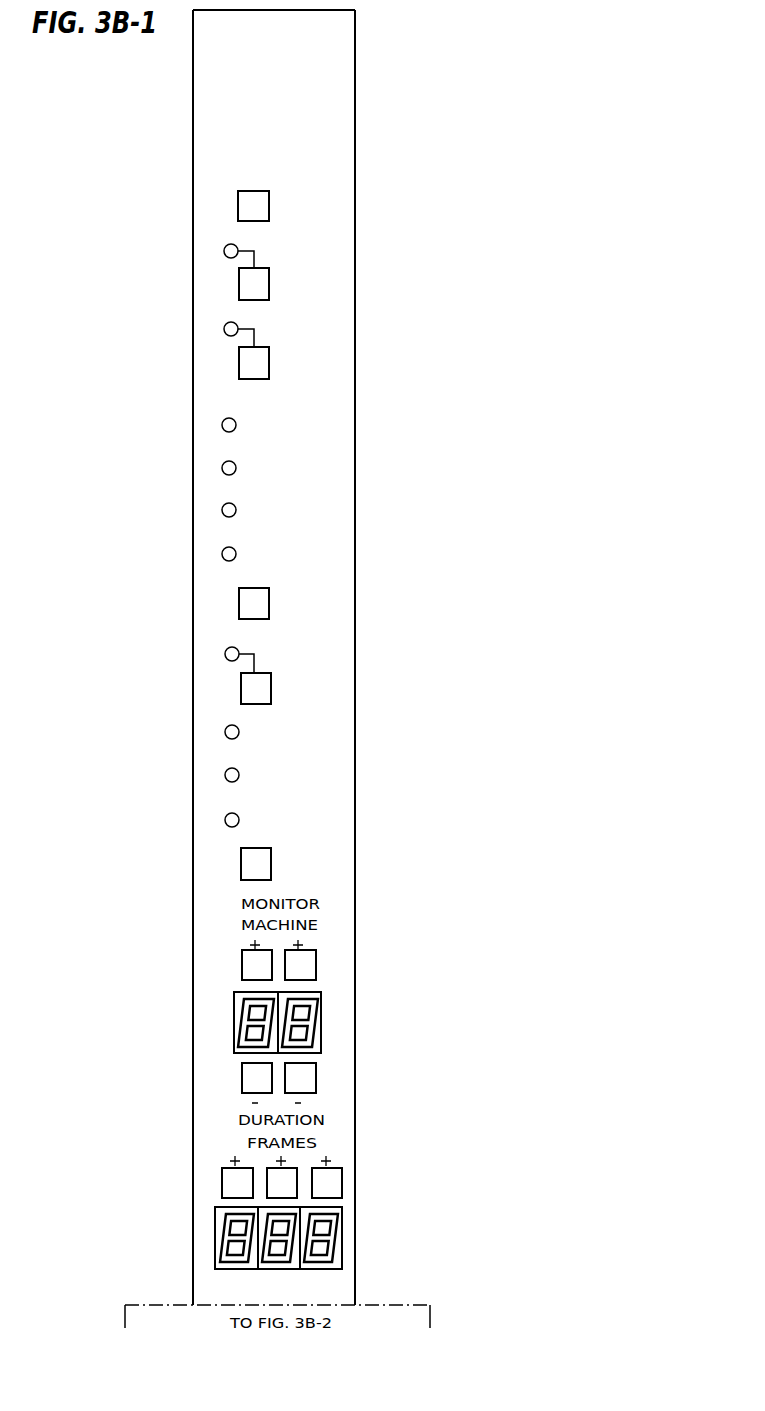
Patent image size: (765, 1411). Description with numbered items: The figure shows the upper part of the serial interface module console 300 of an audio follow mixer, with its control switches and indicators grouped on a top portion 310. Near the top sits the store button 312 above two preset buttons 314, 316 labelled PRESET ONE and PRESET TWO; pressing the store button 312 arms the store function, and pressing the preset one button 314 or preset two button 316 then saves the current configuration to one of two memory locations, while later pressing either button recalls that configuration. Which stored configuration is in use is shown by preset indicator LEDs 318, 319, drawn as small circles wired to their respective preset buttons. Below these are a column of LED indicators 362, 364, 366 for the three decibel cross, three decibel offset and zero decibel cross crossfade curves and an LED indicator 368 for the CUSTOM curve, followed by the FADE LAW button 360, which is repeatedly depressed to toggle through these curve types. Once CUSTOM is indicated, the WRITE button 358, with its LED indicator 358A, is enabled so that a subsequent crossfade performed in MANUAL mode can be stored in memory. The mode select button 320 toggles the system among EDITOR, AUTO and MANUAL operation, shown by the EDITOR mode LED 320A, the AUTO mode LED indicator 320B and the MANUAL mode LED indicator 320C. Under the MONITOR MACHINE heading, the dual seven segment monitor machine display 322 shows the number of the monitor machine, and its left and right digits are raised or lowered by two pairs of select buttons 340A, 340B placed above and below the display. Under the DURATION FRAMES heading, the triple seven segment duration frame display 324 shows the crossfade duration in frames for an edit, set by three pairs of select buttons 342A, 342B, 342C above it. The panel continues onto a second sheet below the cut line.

The serial interface module console 300 is at (445, 88).
The top portion 310 is at (382, 688).
The store button 312 is at (337, 209).
The preset 1 button 314 is at (338, 305).
The preset 2 button 316 is at (338, 380).
The preset 1 indicator LED 318 is at (224, 251).
The preset 2 indicator LED 319 is at (224, 329).
The mode select button 320 is at (262, 848).
The EDITOR mode LED 320A is at (225, 732).
The AUTO mode LED indicator 320B is at (225, 775).
The MANUAL mode LED indicator 320C is at (225, 820).
The monitor machine display 322 is at (321, 1020).
The duration frame display 324 is at (342, 1236).
The select buttons 340A is at (242, 1075).
The select buttons 340B is at (316, 965).
The select buttons 342A is at (222, 1181).
The select buttons 342B is at (267, 1170).
The select buttons 342C is at (342, 1180).
The WRITE button 358 is at (241, 691).
The LED indicator 358A is at (225, 654).
The FADE LAW button 360 is at (239, 604).
The LED indicator 362 is at (222, 425).
The LED indicator 364 is at (222, 468).
The LED indicator 366 is at (222, 510).
The LED indicator 368 is at (222, 554).